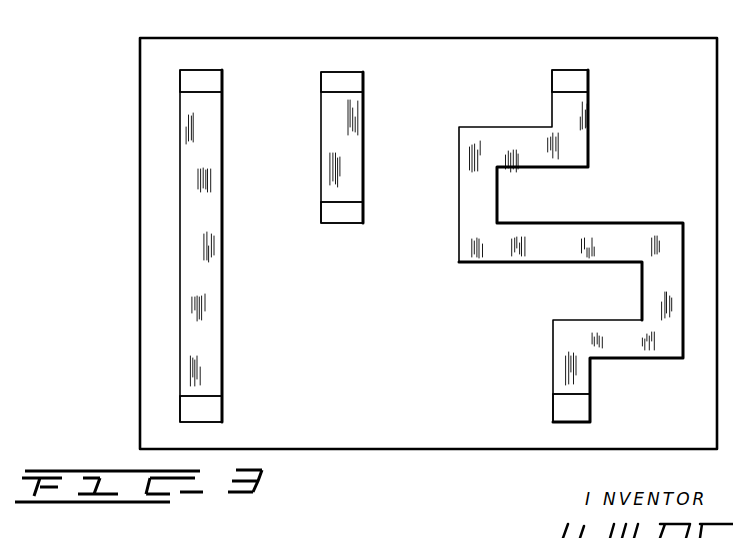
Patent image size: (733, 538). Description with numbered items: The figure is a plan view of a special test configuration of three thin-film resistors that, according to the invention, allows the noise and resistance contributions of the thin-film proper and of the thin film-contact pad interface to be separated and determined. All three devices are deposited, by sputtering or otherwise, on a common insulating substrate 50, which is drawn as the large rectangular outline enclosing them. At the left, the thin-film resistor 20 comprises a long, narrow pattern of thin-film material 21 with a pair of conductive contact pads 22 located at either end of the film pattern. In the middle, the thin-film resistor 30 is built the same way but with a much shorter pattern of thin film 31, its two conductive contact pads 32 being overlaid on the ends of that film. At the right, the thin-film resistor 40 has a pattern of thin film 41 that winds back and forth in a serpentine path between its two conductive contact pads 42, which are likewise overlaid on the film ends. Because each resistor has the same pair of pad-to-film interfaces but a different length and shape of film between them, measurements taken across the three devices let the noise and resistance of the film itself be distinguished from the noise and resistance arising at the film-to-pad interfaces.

The insulating substrate 50 is at (676, 38).
The thin-film resistor 20 is at (170, 82).
The pattern of thin-film material 21 is at (222, 193).
The conductive contact pads 22 is at (222, 78).
The thin-film resistor 30 is at (398, 86).
The pattern of thin film 31 is at (363, 147).
The conductive contact pads 32 is at (323, 72).
The thin-film resistor 40 is at (640, 84).
The pattern of thin film 41 is at (588, 168).
The conductive contact pads 42 is at (554, 70).